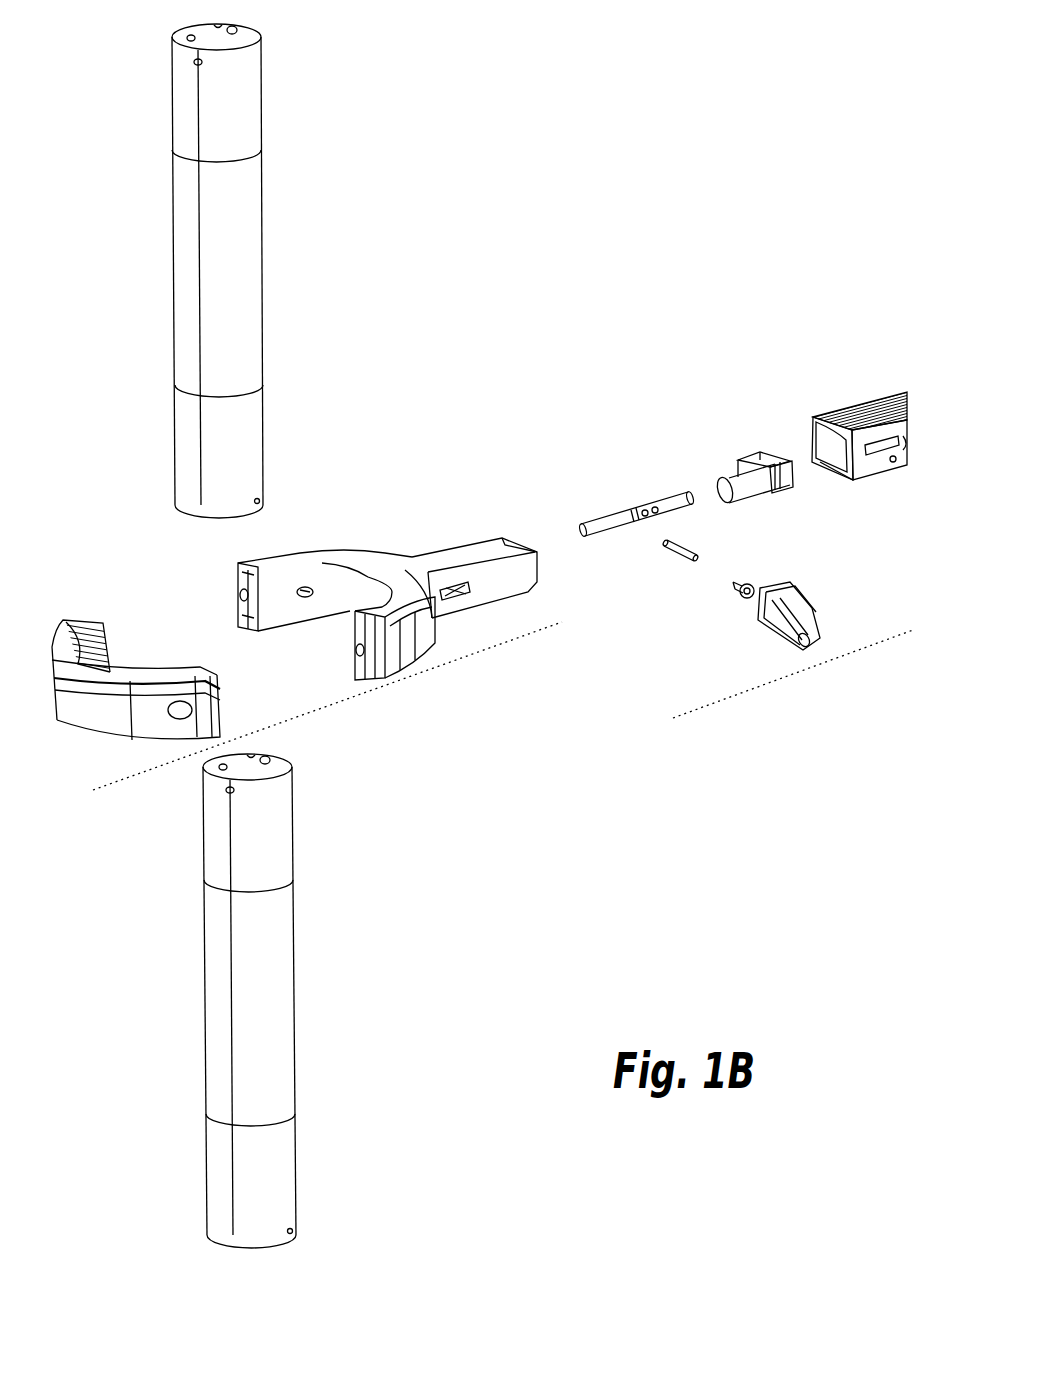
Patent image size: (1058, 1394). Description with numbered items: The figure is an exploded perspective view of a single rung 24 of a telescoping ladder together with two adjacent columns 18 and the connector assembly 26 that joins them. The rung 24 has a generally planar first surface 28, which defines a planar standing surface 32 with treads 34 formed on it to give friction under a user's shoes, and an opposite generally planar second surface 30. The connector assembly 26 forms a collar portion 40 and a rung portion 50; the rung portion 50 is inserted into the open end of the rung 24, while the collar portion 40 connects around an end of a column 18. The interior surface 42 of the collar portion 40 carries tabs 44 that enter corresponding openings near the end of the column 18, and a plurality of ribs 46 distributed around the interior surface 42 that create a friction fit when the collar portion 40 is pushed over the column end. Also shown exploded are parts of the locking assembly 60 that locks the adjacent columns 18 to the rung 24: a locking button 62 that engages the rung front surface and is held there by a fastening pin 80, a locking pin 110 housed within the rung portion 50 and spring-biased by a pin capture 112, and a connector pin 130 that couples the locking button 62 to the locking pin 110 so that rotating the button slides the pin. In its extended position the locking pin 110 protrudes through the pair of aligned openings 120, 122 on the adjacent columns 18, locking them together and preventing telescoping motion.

The column 18 is at (261, 626).
The opening 120 is at (258, 503).
The opening 122 is at (240, 28).
The rung 24 is at (851, 384).
The connector assembly 26 is at (147, 775).
The first surface 28 is at (882, 444).
The planar standing surface 32 is at (882, 455).
The second surface 30 is at (853, 482).
The treads 34 is at (910, 406).
The collar portion 40 is at (289, 632).
The interior surface 42 is at (325, 614).
The tabs 44 is at (298, 590).
The ribs 46 is at (107, 635).
The rung portion 50 is at (470, 545).
The locking assembly 60 is at (730, 703).
The locking button 62 is at (790, 600).
The fastening pin 80 is at (736, 596).
The locking pin 110 is at (675, 500).
The pin capture 112 is at (740, 458).
The connector pin 130 is at (665, 550).